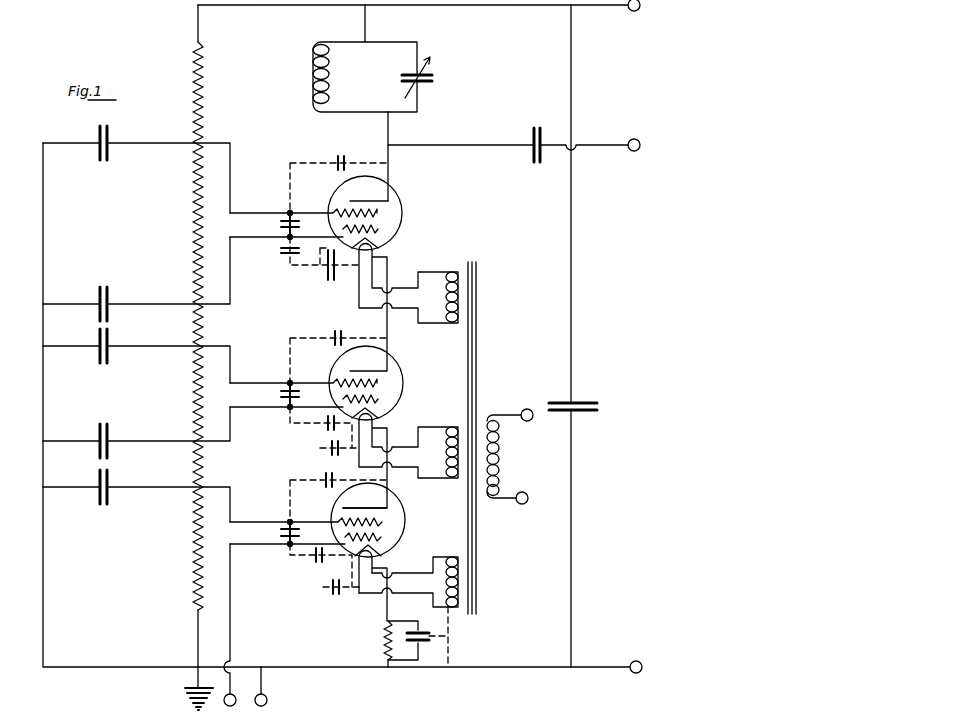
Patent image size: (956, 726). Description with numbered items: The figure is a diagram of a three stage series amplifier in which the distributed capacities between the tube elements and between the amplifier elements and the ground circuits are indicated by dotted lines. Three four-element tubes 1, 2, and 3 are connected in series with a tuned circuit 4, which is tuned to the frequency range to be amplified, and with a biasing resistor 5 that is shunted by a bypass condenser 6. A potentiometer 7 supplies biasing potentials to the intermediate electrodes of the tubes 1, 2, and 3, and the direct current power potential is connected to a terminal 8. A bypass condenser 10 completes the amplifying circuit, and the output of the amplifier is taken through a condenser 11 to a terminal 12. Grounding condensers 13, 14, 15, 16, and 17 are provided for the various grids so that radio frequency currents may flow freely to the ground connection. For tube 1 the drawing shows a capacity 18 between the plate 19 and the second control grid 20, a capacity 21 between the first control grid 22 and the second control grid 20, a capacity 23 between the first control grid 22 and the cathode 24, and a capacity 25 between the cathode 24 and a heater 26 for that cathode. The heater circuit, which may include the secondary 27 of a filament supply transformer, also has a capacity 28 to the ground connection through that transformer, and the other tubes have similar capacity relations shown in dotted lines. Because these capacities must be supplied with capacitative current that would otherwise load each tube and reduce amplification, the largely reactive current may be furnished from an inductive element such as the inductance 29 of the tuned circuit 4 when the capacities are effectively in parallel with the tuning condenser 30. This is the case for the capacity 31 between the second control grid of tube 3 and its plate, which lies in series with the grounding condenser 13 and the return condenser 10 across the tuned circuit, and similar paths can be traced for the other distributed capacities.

The tube 1 is at (339, 538).
The tube 2 is at (407, 380).
The tube 3 is at (402, 201).
The tuned circuit 4 is at (374, 77).
The biasing resistor 5 is at (384, 640).
The bypass condenser 6 is at (433, 631).
The potentiometer 7 is at (194, 80).
The terminal 8 is at (640, 656).
The bypass condenser 10 is at (570, 402).
The condenser 11 is at (534, 140).
The terminal 12 is at (632, 139).
The grounding condenser 13 is at (98, 138).
The grounding condenser 14 is at (98, 300).
The grounding condenser 15 is at (98, 341).
The grounding condenser 16 is at (98, 437).
The grounding condenser 17 is at (98, 483).
The capacity 18 is at (322, 480).
The plate 19 is at (398, 503).
The second control grid 20 is at (384, 528).
The capacity 21 is at (284, 532).
The first control grid 22 is at (348, 530).
The capacity 23 is at (314, 560).
The cathode 24 is at (385, 552).
The capacity 25 is at (333, 586).
The heater 26 is at (384, 563).
The secondary 27 is at (460, 427).
The capacity 28 is at (470, 652).
The inductance 29 is at (312, 87).
The tuning condenser 30 is at (434, 75).
The capacity 31 is at (336, 163).